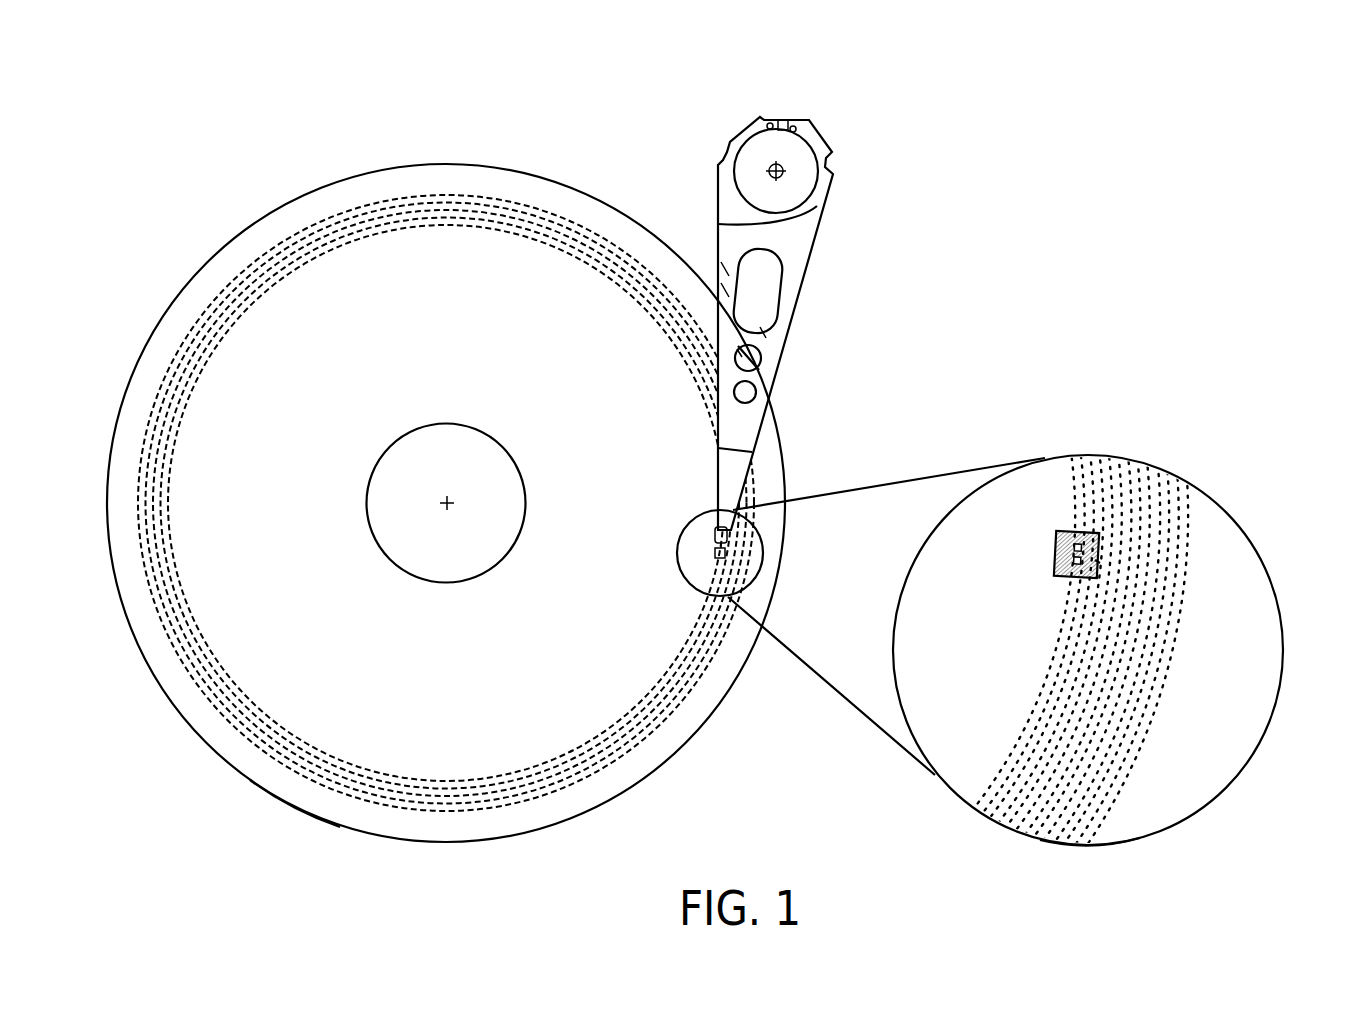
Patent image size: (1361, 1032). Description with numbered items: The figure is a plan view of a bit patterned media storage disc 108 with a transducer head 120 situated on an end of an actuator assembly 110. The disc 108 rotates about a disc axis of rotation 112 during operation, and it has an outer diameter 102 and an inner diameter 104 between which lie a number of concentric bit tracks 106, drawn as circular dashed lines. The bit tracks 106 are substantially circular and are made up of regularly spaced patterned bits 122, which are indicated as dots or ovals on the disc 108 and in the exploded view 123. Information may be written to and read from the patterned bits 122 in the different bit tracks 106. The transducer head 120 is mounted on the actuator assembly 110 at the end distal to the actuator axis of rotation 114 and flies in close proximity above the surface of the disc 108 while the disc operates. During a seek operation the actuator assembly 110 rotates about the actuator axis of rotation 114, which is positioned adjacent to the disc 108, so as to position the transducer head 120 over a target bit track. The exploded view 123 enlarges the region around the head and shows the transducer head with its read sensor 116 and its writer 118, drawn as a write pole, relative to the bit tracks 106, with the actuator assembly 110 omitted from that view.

The outer diameter 102 is at (425, 163).
The inner diameter 104 is at (493, 437).
The bit tracks 106 is at (318, 208).
The BPM disc 108 is at (250, 780).
The actuator assembly 110 is at (781, 354).
The disc axis of rotation 112 is at (447, 503).
The actuator axis of rotation 114 is at (780, 168).
The read sensor 116 is at (1095, 554).
The writer 118 is at (1093, 533).
The transducer head 120 is at (757, 572).
The patterned bits 122 is at (1180, 789).
The exploded view 123 is at (1088, 846).